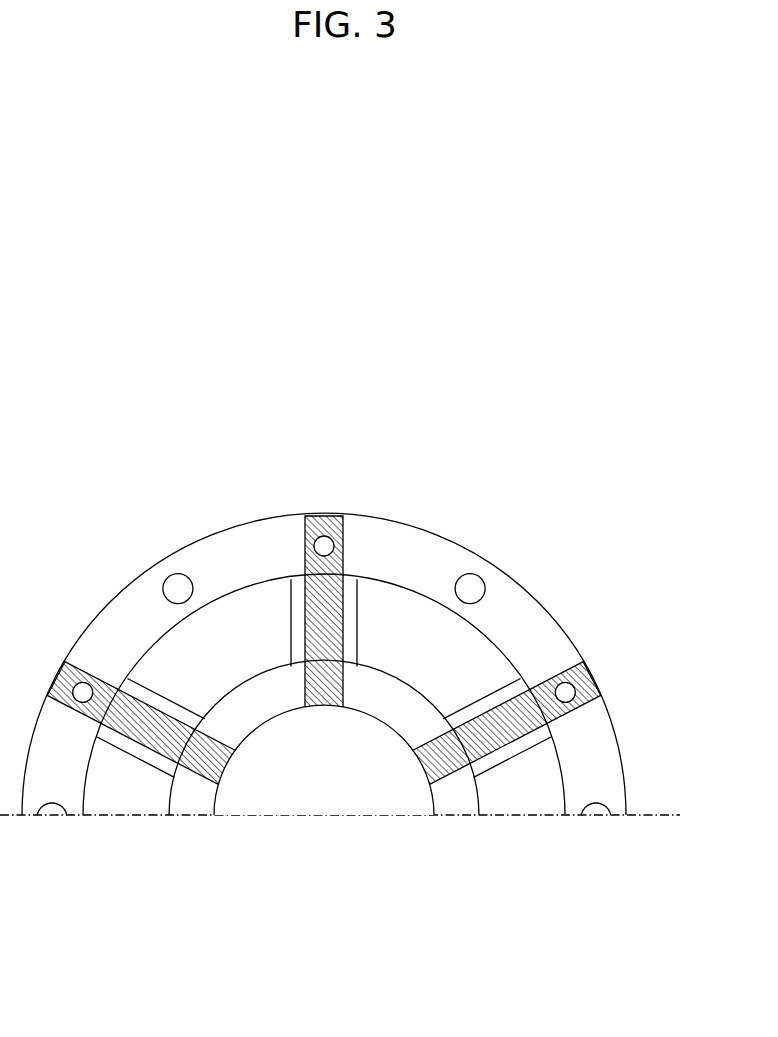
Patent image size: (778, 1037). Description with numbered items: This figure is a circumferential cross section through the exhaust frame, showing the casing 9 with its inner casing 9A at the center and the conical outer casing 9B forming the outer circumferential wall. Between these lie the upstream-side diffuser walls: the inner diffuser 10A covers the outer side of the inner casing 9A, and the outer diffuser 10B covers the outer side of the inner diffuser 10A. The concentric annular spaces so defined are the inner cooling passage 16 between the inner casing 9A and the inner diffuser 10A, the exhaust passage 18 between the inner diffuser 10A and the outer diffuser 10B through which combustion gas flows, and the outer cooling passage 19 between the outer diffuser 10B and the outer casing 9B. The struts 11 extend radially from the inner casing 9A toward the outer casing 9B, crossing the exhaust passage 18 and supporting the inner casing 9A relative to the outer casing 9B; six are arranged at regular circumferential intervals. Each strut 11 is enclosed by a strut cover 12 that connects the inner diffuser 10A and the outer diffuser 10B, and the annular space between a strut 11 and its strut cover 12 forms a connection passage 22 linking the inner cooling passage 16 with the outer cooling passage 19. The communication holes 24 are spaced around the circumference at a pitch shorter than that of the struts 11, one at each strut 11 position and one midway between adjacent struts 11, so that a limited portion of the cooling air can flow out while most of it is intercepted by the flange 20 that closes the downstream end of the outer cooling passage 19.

The casing 9 is at (352, 673).
The inner casing 9A is at (433, 798).
The outer casing 9B is at (553, 615).
The inner diffuser 10A is at (472, 783).
The outer diffuser 10B is at (87, 783).
The strut 11 is at (350, 613).
The strut cover 12 is at (530, 753).
The inner cooling passage 16 is at (267, 704).
The exhaust passage 18 is at (215, 647).
The outer cooling passage 19 is at (242, 565).
The flange 20 is at (590, 750).
The connection passage 22 is at (152, 757).
The communication hole 24 is at (181, 577).